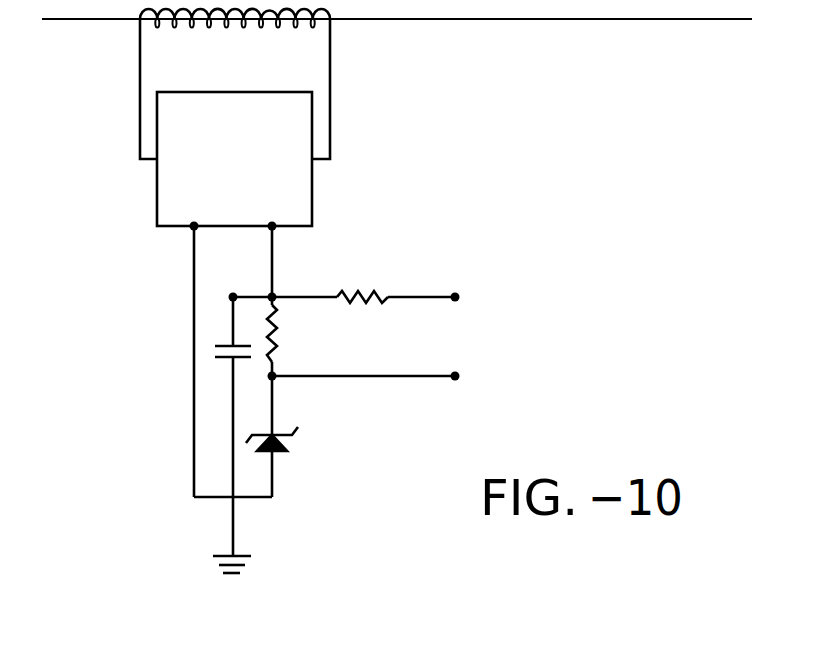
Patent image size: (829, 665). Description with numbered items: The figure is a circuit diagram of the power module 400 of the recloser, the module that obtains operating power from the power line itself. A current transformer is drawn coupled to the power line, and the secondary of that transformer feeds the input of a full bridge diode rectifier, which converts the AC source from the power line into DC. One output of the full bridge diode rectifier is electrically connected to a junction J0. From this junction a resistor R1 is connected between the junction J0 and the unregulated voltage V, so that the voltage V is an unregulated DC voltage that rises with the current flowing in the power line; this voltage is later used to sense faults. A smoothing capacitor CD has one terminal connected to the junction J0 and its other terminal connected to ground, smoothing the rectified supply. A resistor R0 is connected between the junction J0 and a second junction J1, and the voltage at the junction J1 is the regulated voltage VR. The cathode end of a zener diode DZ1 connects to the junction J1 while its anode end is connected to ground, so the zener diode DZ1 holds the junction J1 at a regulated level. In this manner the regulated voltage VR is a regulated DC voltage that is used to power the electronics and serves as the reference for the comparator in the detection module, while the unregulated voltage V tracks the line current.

The power module 400 is at (548, 177).
The junction J0 is at (288, 283).
The junction J1 is at (288, 392).
The resistor R0 is at (287, 336).
The resistor R1 is at (363, 282).
The unregulated voltage V is at (457, 282).
The regulated voltage Vr VR is at (374, 363).
The smoothing capacitor CD is at (225, 325).
The zener diode DZ1 is at (283, 436).